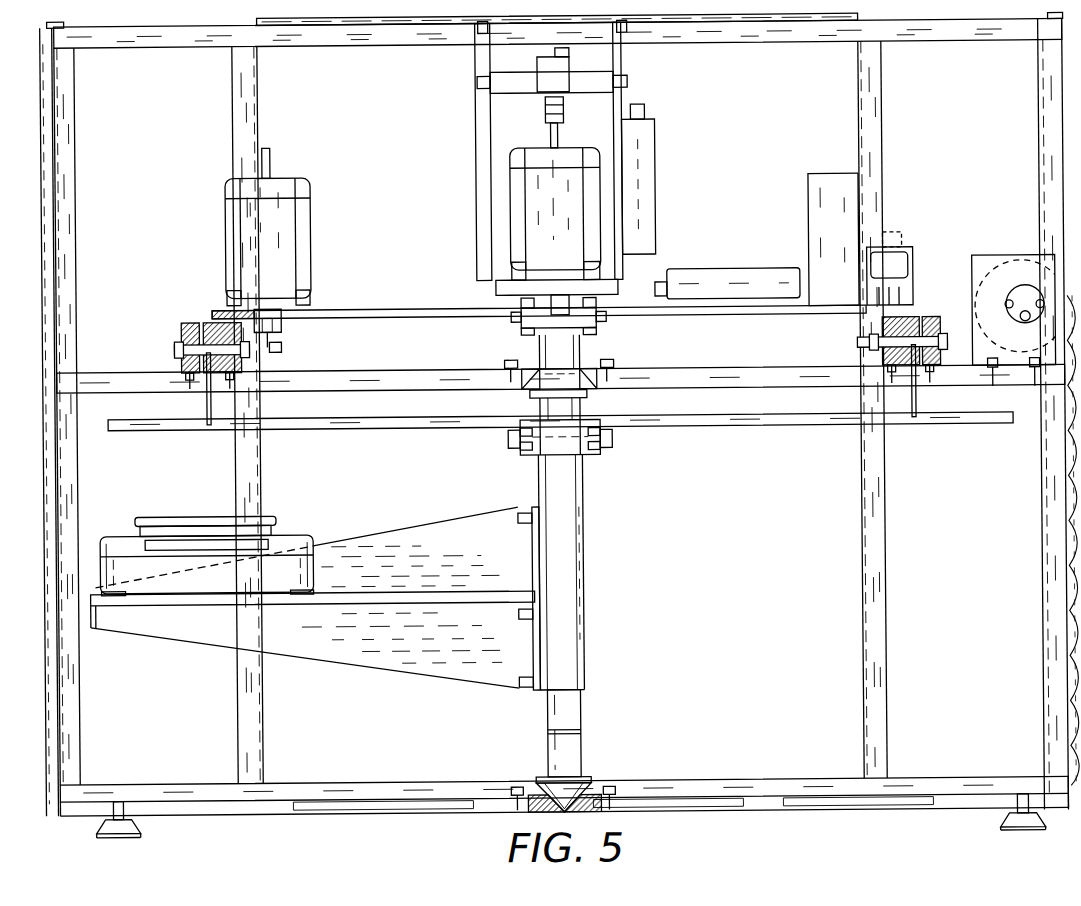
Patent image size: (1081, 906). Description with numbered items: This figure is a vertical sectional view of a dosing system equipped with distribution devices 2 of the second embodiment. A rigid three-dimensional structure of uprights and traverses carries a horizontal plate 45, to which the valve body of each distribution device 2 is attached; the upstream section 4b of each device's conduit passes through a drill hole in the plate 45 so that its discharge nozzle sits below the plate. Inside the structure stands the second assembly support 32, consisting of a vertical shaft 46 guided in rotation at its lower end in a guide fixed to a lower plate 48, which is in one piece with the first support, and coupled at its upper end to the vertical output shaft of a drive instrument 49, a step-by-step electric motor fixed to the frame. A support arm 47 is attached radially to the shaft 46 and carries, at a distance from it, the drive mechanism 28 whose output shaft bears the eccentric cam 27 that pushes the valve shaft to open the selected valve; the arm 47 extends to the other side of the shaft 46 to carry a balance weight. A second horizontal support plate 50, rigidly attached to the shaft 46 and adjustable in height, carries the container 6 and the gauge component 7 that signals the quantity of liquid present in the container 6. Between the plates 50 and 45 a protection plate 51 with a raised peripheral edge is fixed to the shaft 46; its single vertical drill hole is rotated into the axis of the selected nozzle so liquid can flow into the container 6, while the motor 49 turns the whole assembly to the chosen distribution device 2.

The distribution device 2 is at (181, 320).
The upstream section of the conduit 4b is at (203, 420).
The container 6 is at (272, 513).
The gauge component 7 is at (213, 590).
The cam 27 is at (282, 345).
The drive mechanism 28 is at (300, 230).
The second assembly support 32 is at (474, 150).
The horizontal plate 45 is at (147, 369).
The vertical shaft 46 is at (546, 487).
The support arm 47 is at (432, 298).
The lower plate 48 is at (350, 795).
The drive instrument 49 is at (596, 217).
The second horizontal support plate 50 is at (409, 540).
The protection plate 51 is at (389, 427).